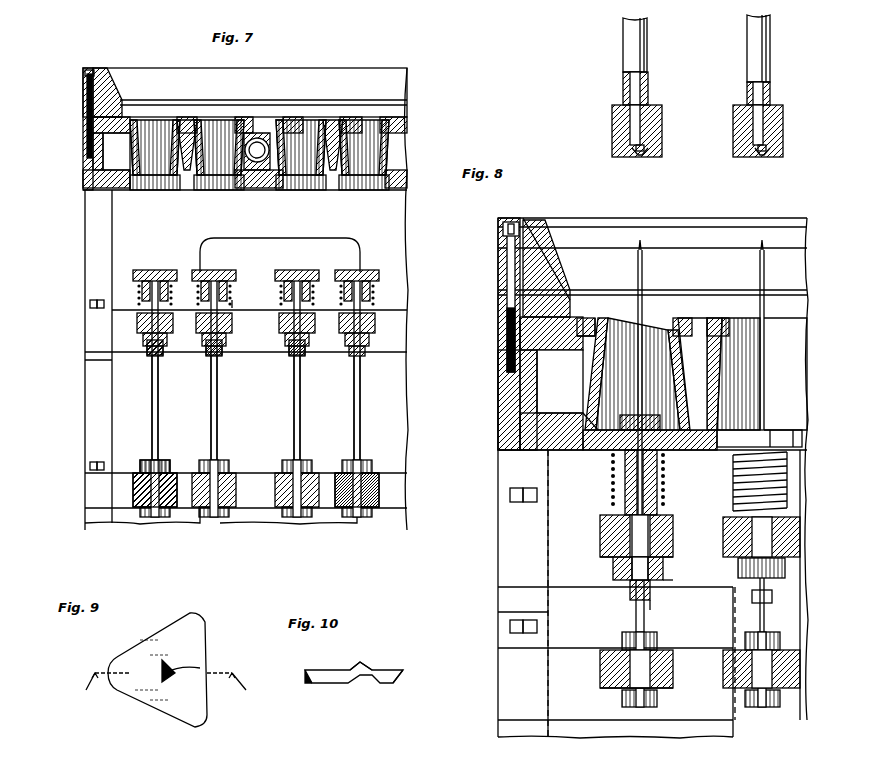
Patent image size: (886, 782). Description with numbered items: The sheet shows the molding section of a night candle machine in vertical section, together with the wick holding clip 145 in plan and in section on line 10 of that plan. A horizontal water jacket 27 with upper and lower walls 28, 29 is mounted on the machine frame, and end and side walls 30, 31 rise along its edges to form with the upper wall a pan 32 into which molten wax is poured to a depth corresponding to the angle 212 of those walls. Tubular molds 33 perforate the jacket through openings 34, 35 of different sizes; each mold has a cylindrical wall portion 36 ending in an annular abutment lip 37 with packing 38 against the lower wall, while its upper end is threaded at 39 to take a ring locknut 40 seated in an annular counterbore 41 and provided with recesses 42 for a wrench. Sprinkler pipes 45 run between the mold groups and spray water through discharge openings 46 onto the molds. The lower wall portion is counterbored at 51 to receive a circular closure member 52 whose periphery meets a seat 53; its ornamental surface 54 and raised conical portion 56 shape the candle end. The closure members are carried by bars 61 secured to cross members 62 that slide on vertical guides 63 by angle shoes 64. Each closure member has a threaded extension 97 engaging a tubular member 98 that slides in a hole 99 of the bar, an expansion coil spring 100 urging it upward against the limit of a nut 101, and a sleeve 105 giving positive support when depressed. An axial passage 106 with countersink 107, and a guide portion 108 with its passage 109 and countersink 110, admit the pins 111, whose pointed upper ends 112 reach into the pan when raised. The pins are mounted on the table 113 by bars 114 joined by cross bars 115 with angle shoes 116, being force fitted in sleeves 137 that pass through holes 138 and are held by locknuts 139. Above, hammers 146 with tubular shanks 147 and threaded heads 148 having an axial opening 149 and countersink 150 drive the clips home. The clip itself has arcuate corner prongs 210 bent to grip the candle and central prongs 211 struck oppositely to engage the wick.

In FIG. 9, the section line 10 is at (160, 685).
In FIG. 7, the water jacket 27 is at (93, 161).
In FIG. 8, the water jacket 27 is at (520, 419).
In FIG. 7, the upper wall 28 is at (90, 128).
In FIG. 8, the upper wall 28 is at (520, 339).
In FIG. 7, the lower wall 29 is at (100, 192).
In FIG. 8, the lower wall 29 is at (570, 440).
In FIG. 7, the end wall 30 is at (160, 78).
In FIG. 8, the end wall 30 is at (590, 228).
In FIG. 7, the side wall 31 is at (83, 101).
In FIG. 8, the side wall 31 is at (498, 280).
In FIG. 8, the pan 32 is at (756, 212).
In FIG. 7, the mold 33 is at (110, 180).
In FIG. 8, the mold 33 is at (583, 387).
In FIG. 8, the opening 34 is at (507, 359).
In FIG. 8, the opening 35 is at (590, 427).
In FIG. 8, the cylindrical wall portion 36 is at (560, 452).
In FIG. 8, the annular abutment lip 37 is at (548, 505).
In FIG. 8, the packing 38 is at (548, 462).
In FIG. 8, the exterior thread 39 is at (590, 360).
In FIG. 7, the ring locknut 40 is at (255, 135).
In FIG. 8, the ring locknut 40 is at (682, 318).
In FIG. 8, the annular counterbore 41 is at (583, 336).
In FIG. 8, the spaced recesses 42 is at (716, 318).
In FIG. 7, the sprinkler pipe 45 is at (262, 190).
In FIG. 7, the discharge opening 46 is at (260, 140).
In FIG. 8, the counterbore 51 is at (620, 452).
In FIG. 7, the closure member 52 is at (180, 272).
In FIG. 8, the closure member 52 is at (625, 485).
In FIG. 8, the seat 53 is at (697, 420).
In FIG. 8, the ornamental surface 54 is at (660, 430).
In FIG. 8, the raised conical portion 56 is at (640, 440).
In FIG. 7, the bar 61 is at (140, 325).
In FIG. 8, the bar 61 is at (600, 540).
In FIG. 7, the cross member 62 is at (95, 331).
In FIG. 8, the cross member 62 is at (520, 566).
In FIG. 7, the vertical guide 63 is at (100, 255).
In FIG. 8, the vertical guide 63 is at (505, 620).
In FIG. 7, the angle shoe 64 is at (90, 305).
In FIG. 8, the angle shoe 64 is at (510, 600).
In FIG. 8, the threaded extension 97 is at (665, 455).
In FIG. 7, the tubular member 98 is at (226, 342).
In FIG. 8, the tubular member 98 is at (673, 550).
In FIG. 8, the hole 99 is at (632, 555).
In FIG. 7, the expansion coil spring 100 is at (232, 308).
In FIG. 8, the expansion coil spring 100 is at (625, 505).
In FIG. 7, the nut 101 is at (170, 350).
In FIG. 8, the nut 101 is at (663, 570).
In FIG. 7, the sleeve 105 is at (138, 295).
In FIG. 8, the sleeve 105 is at (617, 450).
In FIG. 8, the axial passage 106 is at (666, 478).
In FIG. 8, the countersink 107 is at (658, 500).
In FIG. 7, the guide portion 108 is at (308, 352).
In FIG. 8, the guide portion 108 is at (648, 590).
In FIG. 8, the axial passage 109 is at (630, 600).
In FIG. 8, the countersink 110 is at (644, 602).
In FIG. 7, the pin 111 is at (212, 435).
In FIG. 8, the pin 111 is at (636, 620).
In FIG. 8, the upper end 112 is at (640, 250).
In FIG. 8, the table 113 is at (495, 705).
In FIG. 7, the bar 114 is at (135, 490).
In FIG. 8, the bar 114 is at (600, 674).
In FIG. 7, the cross bar 115 is at (95, 491).
In FIG. 8, the cross bar 115 is at (518, 678).
In FIG. 7, the angle shoe 116 is at (90, 467).
In FIG. 8, the angle shoe 116 is at (510, 643).
In FIG. 7, the sleeve 137 is at (362, 478).
In FIG. 8, the sleeve 137 is at (673, 672).
In FIG. 8, the hole 138 is at (608, 685).
In FIG. 7, the locknut 139 is at (165, 475).
In FIG. 8, the locknut 139 is at (622, 640).
In FIG. 9, the wick holding clip 145 is at (150, 625).
In FIG. 10, the wick holding clip 145 is at (354, 668).
In FIG. 8, the hammer 146 is at (622, 50).
In FIG. 8, the tubular shank 147 is at (622, 89).
In FIG. 8, the head 148 is at (612, 123).
In FIG. 8, the axial opening 149 is at (635, 156).
In FIG. 8, the countersink 150 is at (644, 150).
In FIG. 10, the prong 210 is at (390, 683).
In FIG. 9, the prong 211 is at (175, 672).
In FIG. 10, the prong 211 is at (364, 663).
In FIG. 8, the angle 212 is at (595, 222).